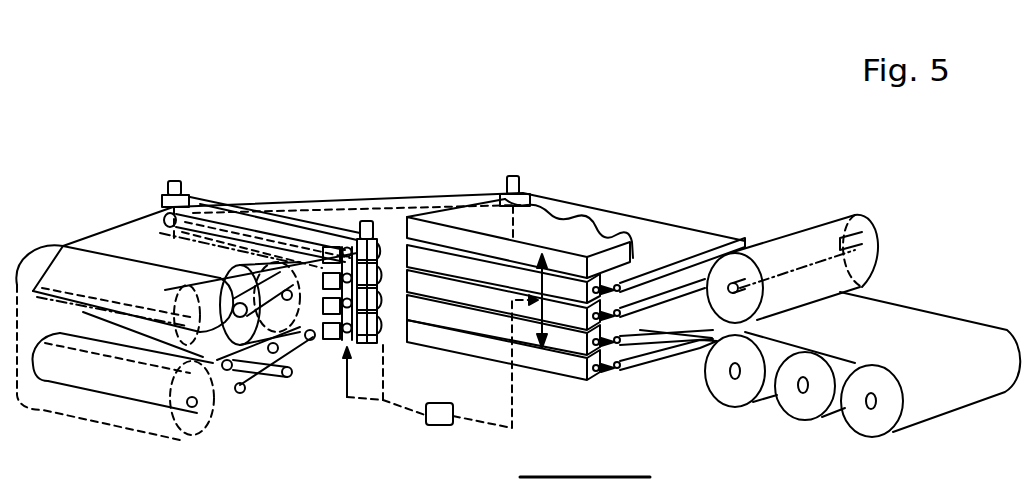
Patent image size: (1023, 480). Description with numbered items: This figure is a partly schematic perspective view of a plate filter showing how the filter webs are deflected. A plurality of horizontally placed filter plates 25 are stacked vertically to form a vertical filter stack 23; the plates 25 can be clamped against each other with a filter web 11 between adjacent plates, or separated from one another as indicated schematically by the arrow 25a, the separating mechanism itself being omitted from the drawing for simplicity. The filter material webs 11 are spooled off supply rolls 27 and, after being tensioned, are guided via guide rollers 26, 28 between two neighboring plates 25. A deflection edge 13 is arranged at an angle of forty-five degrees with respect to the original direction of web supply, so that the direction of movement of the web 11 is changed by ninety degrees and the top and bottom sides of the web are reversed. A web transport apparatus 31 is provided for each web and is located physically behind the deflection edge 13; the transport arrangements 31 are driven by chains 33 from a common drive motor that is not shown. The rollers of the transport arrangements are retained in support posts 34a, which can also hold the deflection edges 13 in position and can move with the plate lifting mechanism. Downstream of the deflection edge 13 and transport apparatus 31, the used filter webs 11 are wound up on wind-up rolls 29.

The filter web 11 is at (676, 231).
The deflection edge 13 is at (362, 192).
The vertical filter stack 23 is at (605, 160).
The filter plates 25 is at (465, 293).
The arrow 25a is at (550, 322).
The guide roller 26 is at (630, 365).
The supply rolls 27 is at (862, 238).
The guide roller 28 is at (603, 378).
The wind-up rolls 29 is at (200, 332).
The web transport apparatus 31 is at (333, 345).
The chains 33 is at (348, 344).
The support posts 34a is at (174, 181).